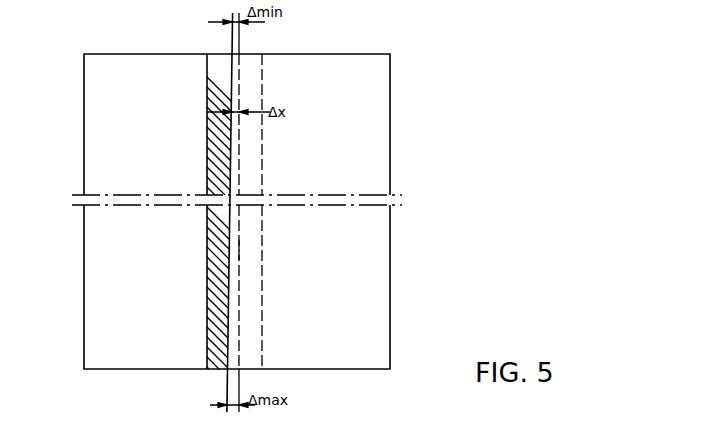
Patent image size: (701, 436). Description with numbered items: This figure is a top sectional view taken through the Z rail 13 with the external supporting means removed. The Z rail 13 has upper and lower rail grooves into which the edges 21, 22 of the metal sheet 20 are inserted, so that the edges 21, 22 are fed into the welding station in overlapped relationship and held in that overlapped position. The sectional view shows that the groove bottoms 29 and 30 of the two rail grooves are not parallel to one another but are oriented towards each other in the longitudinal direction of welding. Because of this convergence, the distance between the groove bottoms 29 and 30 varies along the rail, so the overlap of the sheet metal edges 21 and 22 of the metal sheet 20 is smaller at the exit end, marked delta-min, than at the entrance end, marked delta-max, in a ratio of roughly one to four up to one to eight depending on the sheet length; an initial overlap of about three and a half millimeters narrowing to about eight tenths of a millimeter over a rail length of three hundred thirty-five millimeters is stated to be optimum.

The metal sheet 20 is at (372, 166).
The Z rail 13 is at (219, 151).
The edge of metal sheet 21 is at (231, 160).
The edge of metal sheet 22 is at (238, 224).
The groove bottom 30 is at (238, 250).
The groove bottom 29 is at (230, 308).